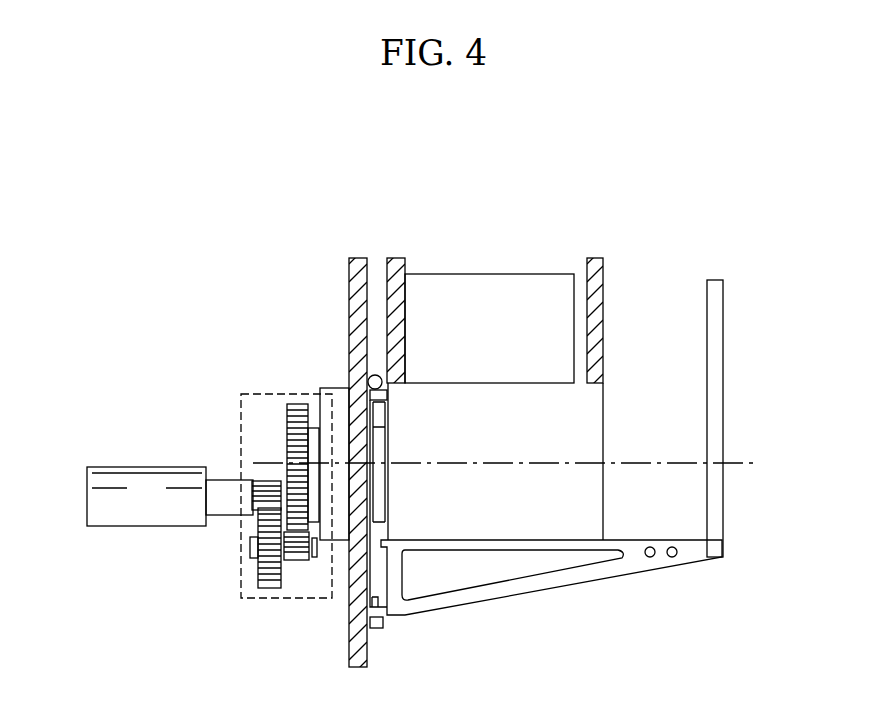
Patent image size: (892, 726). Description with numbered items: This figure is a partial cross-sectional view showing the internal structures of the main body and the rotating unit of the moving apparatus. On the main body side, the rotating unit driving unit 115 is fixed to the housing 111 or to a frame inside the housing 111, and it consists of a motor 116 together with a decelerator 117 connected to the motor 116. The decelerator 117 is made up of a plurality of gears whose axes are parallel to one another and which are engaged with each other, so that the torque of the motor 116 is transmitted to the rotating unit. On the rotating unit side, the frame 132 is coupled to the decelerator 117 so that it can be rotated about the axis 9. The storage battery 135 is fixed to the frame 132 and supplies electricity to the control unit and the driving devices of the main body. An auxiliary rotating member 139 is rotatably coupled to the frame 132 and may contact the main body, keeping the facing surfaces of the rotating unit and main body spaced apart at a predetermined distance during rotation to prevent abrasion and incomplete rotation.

The axis 9 is at (739, 463).
The housing 111 is at (350, 295).
The rotating unit driving unit 115 is at (209, 482).
The motor 116 is at (130, 467).
The decelerator 117 is at (240, 426).
The frame 132 is at (723, 354).
The storage battery 135 is at (498, 273).
The auxiliary rotating member 139 is at (385, 622).